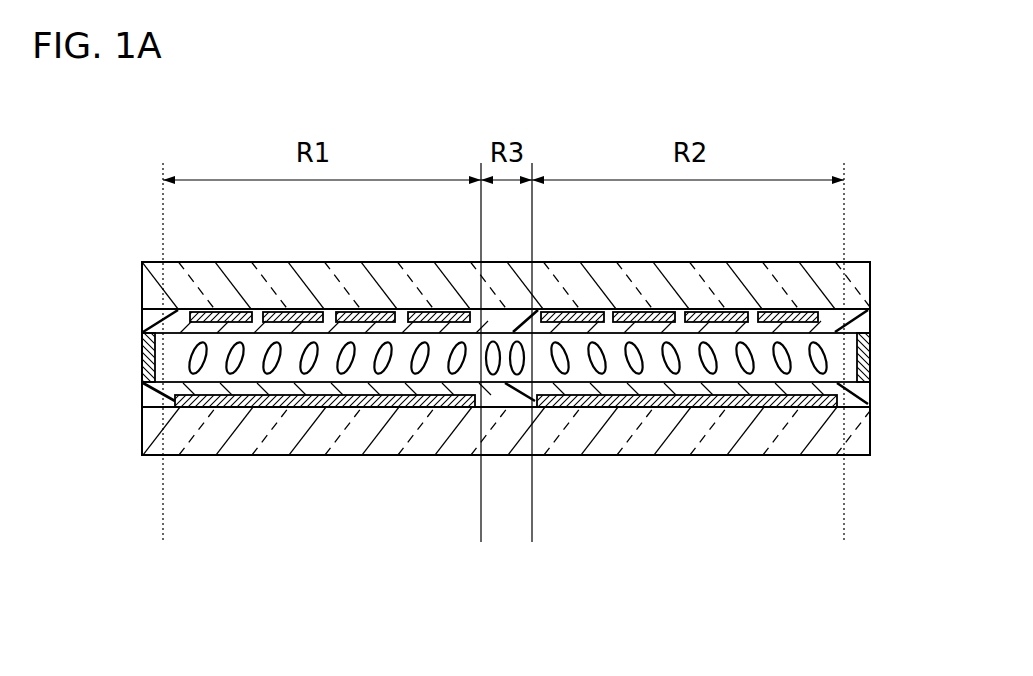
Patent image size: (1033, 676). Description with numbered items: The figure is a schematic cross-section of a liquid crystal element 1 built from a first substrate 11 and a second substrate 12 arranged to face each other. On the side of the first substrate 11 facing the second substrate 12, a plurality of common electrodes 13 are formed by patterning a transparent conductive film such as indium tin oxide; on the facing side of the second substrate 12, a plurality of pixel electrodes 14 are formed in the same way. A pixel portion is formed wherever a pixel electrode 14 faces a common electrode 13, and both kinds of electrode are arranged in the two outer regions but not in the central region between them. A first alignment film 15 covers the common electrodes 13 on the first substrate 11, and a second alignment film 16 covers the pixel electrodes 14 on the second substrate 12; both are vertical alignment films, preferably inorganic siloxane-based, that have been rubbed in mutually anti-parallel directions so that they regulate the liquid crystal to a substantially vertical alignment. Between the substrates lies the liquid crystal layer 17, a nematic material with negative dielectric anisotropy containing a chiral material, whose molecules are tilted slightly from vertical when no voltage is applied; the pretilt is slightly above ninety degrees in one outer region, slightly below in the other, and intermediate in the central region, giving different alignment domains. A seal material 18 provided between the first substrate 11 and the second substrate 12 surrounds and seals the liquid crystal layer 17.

The liquid crystal element 1 is at (514, 635).
The first substrate 11 is at (870, 434).
The second substrate 12 is at (870, 287).
The common electrode 13 is at (252, 407).
The pixel electrode 14 is at (282, 312).
The first alignment film 15 is at (870, 394).
The second alignment film 16 is at (870, 323).
The liquid crystal layer 17 is at (617, 368).
The seal material 18 is at (870, 359).